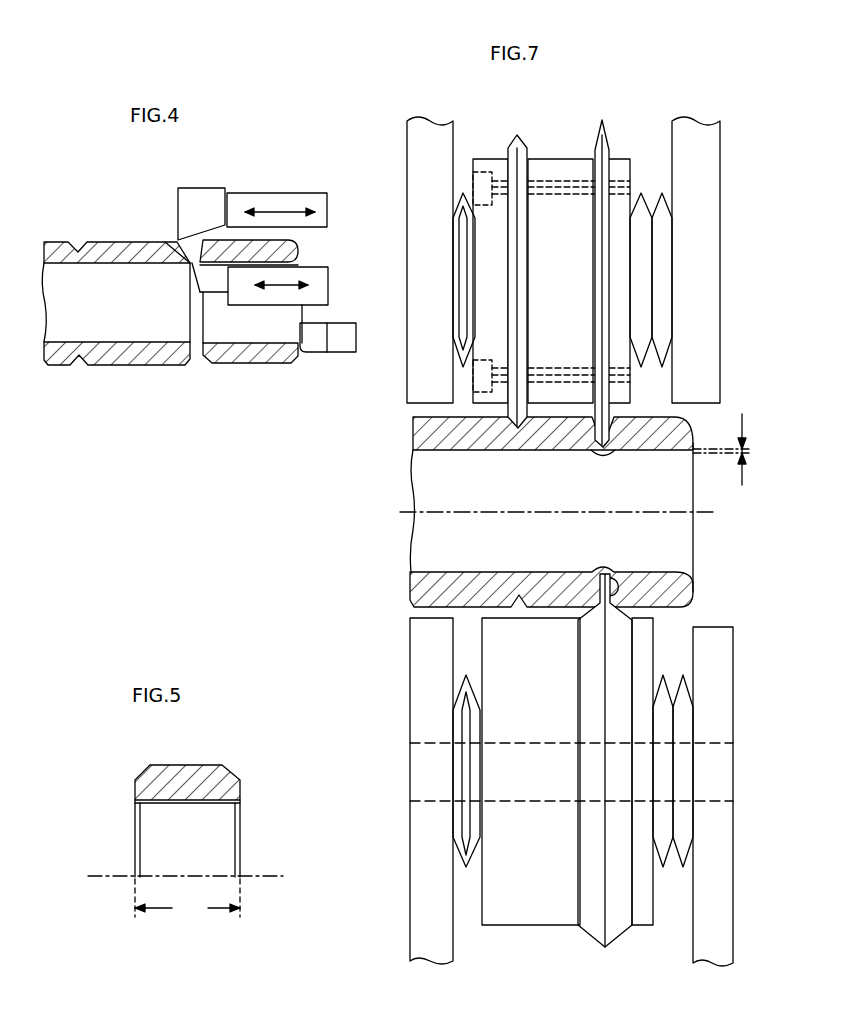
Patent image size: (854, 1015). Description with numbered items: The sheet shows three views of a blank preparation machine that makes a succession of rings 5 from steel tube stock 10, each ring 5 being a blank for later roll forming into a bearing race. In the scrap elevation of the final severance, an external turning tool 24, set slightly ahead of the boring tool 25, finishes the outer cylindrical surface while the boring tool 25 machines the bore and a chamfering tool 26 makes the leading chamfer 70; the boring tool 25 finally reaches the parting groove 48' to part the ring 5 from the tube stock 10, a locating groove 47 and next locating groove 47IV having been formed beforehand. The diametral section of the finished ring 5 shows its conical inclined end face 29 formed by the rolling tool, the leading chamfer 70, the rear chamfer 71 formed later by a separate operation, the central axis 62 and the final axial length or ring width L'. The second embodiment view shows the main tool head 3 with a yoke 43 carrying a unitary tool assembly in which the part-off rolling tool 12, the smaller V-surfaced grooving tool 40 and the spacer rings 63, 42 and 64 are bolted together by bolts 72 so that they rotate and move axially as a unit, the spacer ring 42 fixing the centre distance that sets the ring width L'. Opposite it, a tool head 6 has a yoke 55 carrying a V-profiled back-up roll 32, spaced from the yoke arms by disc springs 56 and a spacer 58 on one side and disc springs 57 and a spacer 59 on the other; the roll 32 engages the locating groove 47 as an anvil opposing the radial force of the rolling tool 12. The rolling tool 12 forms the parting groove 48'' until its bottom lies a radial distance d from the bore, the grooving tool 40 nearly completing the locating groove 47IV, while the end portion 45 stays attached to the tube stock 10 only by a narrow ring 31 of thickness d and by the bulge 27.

In FIG. 7, the main tool head 3 is at (728, 314).
In FIG. 4, the ring 5 is at (232, 247).
In FIG. 5, the ring 5 is at (122, 822).
In FIG. 7, the tool head 6 is at (478, 954).
In FIG. 4, the tube stock 10 is at (53, 367).
In FIG. 7, the part-off rolling tool 12 is at (608, 143).
In FIG. 4, the external turning tool 24 is at (308, 200).
In FIG. 4, the boring tool 25 is at (215, 293).
In FIG. 4, the chamfering tool 26 is at (318, 352).
In FIG. 7, the bulge 27 is at (610, 457).
In FIG. 5, the conical inclined end face 29 is at (137, 785).
In FIG. 7, the narrow ring 31 is at (597, 570).
In FIG. 7, the back-up roll 32 is at (617, 935).
In FIG. 7, the grooving tool 40 is at (500, 148).
In FIG. 7, the spacer ring 42 is at (552, 160).
In FIG. 7, the yoke 43 is at (698, 190).
In FIG. 7, the end portion 45 is at (693, 540).
In FIG. 4, the locating groove 47 is at (192, 365).
In FIG. 7, the locating groove 47 is at (593, 615).
In FIG. 4, the locating groove 47IV is at (85, 367).
In FIG. 7, the locating groove 47IV is at (519, 597).
In FIG. 4, the parting groove 48' is at (161, 274).
In FIG. 7, the parting groove 48'' is at (634, 550).
In FIG. 7, the yoke 55 is at (410, 707).
In FIG. 7, the disc springs 56 is at (462, 870).
In FIG. 7, the disc springs 57 is at (672, 865).
In FIG. 7, the spacer 58 is at (546, 905).
In FIG. 7, the spacer 59 is at (640, 925).
In FIG. 5, the central axis 62 is at (255, 877).
In FIG. 7, the central axis 62 is at (423, 515).
In FIG. 7, the spacer ring 63 is at (480, 167).
In FIG. 7, the spacer ring 64 is at (620, 175).
In FIG. 5, the leading chamfer 70 is at (240, 855).
In FIG. 5, the rear chamfer 71 is at (135, 856).
In FIG. 7, the rear chamfer 71 is at (430, 765).
In FIG. 7, the bolts 72 is at (555, 200).
In FIG. 7, the radial distance d is at (730, 449).
In FIG. 5, the final axial length L' is at (187, 899).